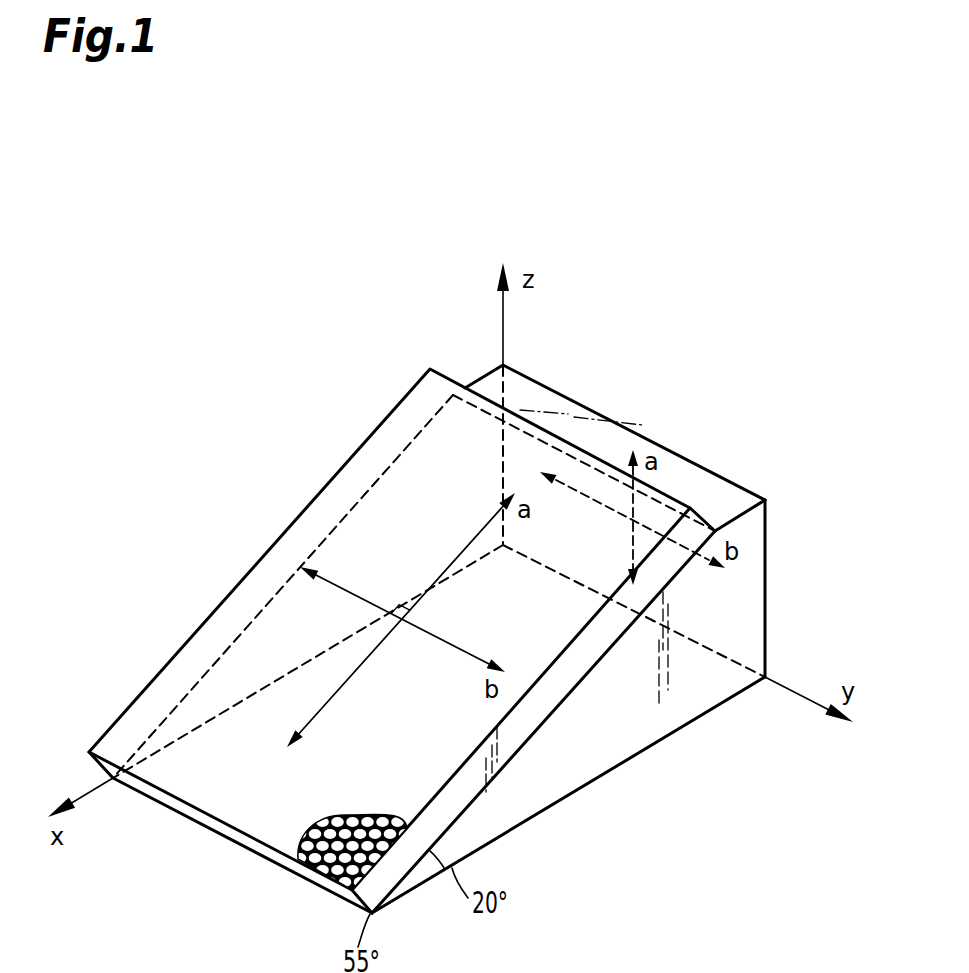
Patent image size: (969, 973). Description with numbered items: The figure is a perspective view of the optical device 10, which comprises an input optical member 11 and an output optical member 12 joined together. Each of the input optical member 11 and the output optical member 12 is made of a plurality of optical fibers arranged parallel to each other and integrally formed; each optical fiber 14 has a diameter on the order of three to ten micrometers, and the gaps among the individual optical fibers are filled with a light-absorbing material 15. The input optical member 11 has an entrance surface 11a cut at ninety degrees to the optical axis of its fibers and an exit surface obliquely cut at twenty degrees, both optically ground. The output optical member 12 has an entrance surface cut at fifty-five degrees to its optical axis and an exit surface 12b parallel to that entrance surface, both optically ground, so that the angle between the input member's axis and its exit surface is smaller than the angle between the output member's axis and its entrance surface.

The optical device 10 is at (288, 480).
The input optical member 11 is at (683, 692).
The entrance surface 11a is at (740, 592).
The output optical member 12 is at (415, 392).
The exit surface 12b is at (308, 818).
The optical fiber 14 is at (300, 864).
The light-absorbing material 15 is at (340, 887).